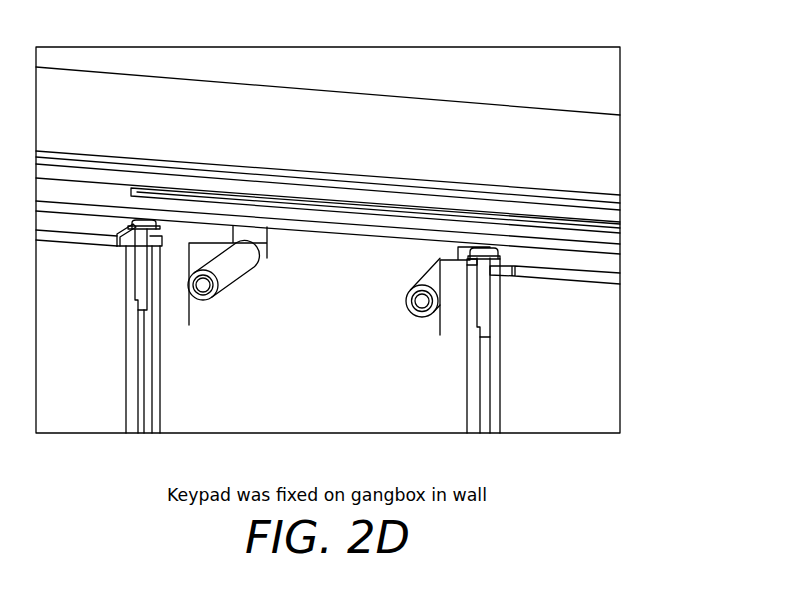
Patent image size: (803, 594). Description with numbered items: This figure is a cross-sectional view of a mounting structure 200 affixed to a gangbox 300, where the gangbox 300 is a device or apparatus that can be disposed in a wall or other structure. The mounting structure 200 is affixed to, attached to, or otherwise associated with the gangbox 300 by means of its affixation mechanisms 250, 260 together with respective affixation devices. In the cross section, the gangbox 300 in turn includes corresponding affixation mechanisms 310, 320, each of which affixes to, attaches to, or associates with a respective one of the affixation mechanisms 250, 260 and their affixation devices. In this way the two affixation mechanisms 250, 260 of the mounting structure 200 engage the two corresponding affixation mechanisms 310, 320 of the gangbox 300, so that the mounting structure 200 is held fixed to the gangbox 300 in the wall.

The mounting structure 200 is at (250, 286).
The affixation mechanism 250 is at (152, 243).
The affixation mechanism 260 is at (473, 268).
The gangbox 300 is at (537, 427).
The affixation mechanism 310 is at (155, 399).
The affixation mechanism 320 is at (467, 404).